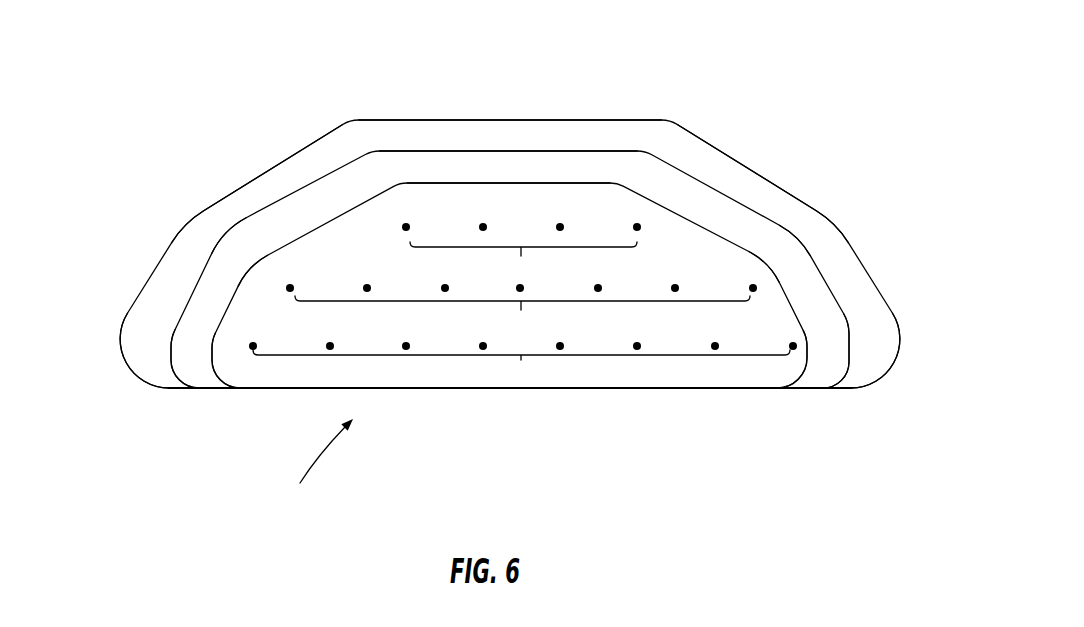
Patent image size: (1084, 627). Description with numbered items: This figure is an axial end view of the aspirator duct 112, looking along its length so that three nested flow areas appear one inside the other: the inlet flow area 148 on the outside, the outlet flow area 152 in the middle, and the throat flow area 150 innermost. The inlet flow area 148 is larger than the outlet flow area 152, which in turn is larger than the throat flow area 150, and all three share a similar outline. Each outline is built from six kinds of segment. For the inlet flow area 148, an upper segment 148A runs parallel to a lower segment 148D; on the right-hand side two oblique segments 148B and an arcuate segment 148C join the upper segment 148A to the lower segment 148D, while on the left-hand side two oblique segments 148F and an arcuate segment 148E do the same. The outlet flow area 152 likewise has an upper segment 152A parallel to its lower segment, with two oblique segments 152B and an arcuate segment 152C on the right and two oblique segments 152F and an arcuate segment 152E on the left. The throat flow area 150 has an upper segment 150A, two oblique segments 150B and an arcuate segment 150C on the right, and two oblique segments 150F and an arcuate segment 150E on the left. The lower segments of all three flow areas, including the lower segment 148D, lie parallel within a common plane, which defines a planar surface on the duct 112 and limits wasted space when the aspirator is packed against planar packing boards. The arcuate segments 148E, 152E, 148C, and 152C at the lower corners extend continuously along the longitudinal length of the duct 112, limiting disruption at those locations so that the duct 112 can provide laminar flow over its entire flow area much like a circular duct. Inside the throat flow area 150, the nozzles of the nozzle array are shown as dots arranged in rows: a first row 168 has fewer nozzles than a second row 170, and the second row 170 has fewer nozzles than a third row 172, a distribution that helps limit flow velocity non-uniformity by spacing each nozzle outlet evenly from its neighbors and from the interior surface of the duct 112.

The duct 112 is at (313, 466).
The inlet flow area 148 is at (565, 137).
The upper segment 148A is at (415, 119).
The oblique segments 148B is at (848, 240).
The arcuate segment 148C is at (893, 363).
The lower segment 148D is at (632, 391).
The arcuate segment 148E is at (120, 358).
The oblique segments 148F is at (222, 197).
The throat flow area 150 is at (300, 343).
The upper segment 150A is at (453, 185).
The oblique segments 150B is at (773, 283).
The arcuate segment 150C is at (800, 372).
The arcuate segment 150E is at (217, 377).
The oblique segments 150F is at (285, 250).
The outlet flow area 152 is at (317, 207).
The upper segment 152A is at (449, 151).
The oblique segments 152B is at (773, 223).
The arcuate segment 152C is at (845, 372).
The arcuate segment 152E is at (172, 368).
The oblique segments 152F is at (250, 220).
The first row 168 is at (521, 254).
The second row 170 is at (521, 311).
The third row 172 is at (523, 365).